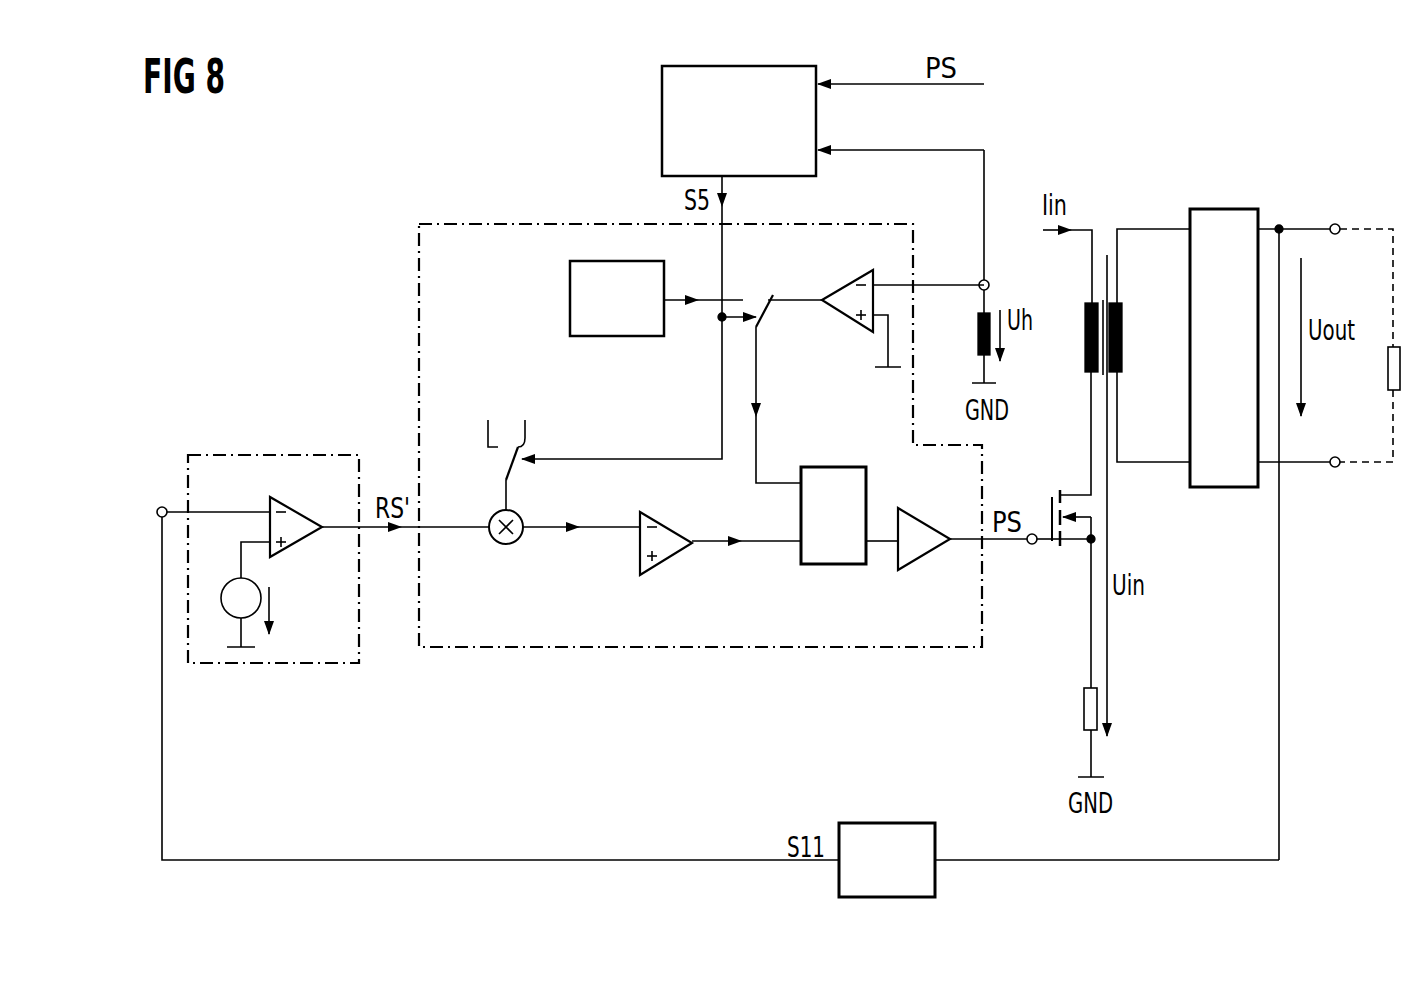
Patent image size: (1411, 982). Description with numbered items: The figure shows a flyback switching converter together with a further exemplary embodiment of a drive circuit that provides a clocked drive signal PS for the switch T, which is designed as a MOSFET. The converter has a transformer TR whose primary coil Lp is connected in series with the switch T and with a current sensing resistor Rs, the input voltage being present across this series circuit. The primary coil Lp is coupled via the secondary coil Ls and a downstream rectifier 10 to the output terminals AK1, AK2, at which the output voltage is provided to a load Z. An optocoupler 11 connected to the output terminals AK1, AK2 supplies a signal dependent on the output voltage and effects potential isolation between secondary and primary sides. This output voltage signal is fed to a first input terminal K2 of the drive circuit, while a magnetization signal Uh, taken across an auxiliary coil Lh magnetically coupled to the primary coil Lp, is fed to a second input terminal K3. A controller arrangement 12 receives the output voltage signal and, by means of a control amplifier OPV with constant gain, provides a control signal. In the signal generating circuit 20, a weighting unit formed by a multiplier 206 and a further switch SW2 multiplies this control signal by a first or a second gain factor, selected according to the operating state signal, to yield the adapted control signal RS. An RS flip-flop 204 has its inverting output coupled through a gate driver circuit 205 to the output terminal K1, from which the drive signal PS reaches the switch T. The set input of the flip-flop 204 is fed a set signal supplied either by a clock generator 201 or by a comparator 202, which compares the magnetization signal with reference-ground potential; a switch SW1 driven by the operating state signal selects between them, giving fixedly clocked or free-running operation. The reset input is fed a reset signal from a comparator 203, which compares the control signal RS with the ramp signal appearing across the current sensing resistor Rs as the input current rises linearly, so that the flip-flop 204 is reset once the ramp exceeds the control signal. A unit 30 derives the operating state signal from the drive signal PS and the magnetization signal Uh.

The unit 30 is at (816, 119).
The signal generating circuit 20 is at (655, 648).
The clock generator 201 is at (620, 338).
The comparator 202 is at (847, 283).
The comparator 203 is at (667, 562).
The RS flip-flop 204 is at (834, 565).
The gate driver circuit 205 is at (928, 556).
The multiplier 206 is at (508, 545).
The controller arrangement 12 is at (237, 455).
The optocoupler 11 is at (890, 823).
The rectifier 10 is at (1222, 209).
The switch SW1 is at (767, 313).
The further switch SW2 is at (507, 470).
The control amplifier OPV is at (311, 540).
The output terminal K1 is at (1034, 546).
The first input terminal K2 is at (162, 506).
The second input terminal K3 is at (981, 281).
The switch T is at (1058, 494).
The current sensing resistor Rs is at (1084, 712).
The auxiliary coil Lh is at (978, 340).
The transformer TR is at (1104, 260).
The primary coil Lp is at (1085, 340).
The secondary coil Ls is at (1122, 338).
The output terminal AK1 is at (1338, 213).
The output terminal AK2 is at (1342, 484).
The load Z is at (1388, 368).